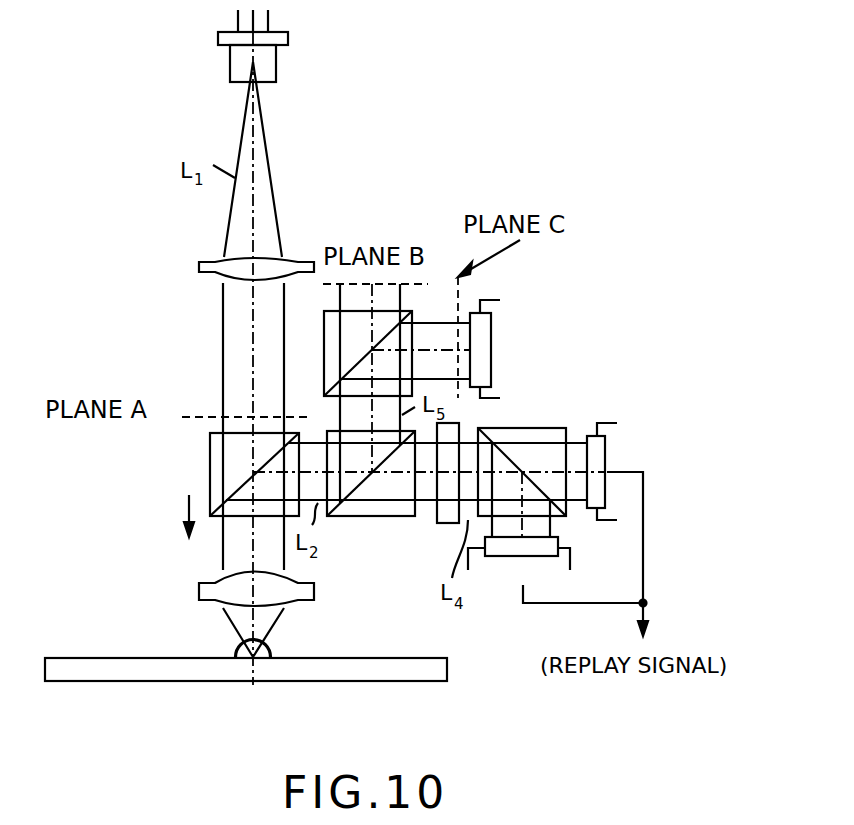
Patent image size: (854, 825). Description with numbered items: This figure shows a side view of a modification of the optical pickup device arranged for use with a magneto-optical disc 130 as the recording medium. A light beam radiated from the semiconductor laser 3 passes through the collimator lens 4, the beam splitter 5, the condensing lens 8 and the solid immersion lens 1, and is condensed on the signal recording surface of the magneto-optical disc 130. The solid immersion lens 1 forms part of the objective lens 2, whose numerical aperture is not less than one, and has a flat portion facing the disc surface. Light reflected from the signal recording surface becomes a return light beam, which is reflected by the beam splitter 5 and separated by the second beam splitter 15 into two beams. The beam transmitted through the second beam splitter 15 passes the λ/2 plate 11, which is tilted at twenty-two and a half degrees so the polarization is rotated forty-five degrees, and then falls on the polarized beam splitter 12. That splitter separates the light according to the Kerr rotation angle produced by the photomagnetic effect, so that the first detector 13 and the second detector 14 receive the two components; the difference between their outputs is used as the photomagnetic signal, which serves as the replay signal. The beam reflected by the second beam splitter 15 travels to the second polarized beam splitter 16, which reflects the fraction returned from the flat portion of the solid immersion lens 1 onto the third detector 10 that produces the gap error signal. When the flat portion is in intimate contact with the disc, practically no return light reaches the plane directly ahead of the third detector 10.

The solid immersion lens 1 is at (235, 652).
The objective lens 2 is at (135, 565).
The semiconductor laser 3 is at (265, 75).
The collimator lens 4 is at (282, 266).
The beam splitter 5 is at (210, 468).
The condensing lens 8 is at (207, 590).
The third detector 10 is at (487, 335).
The λ/2 plate 11 is at (445, 527).
The polarized beam splitter 12 is at (552, 432).
The first detector 13 is at (600, 450).
The second detector 14 is at (530, 550).
The second beam splitter 15 is at (400, 515).
The second polarized beam splitter 16 is at (410, 322).
The magneto-optical disc 130 is at (418, 681).